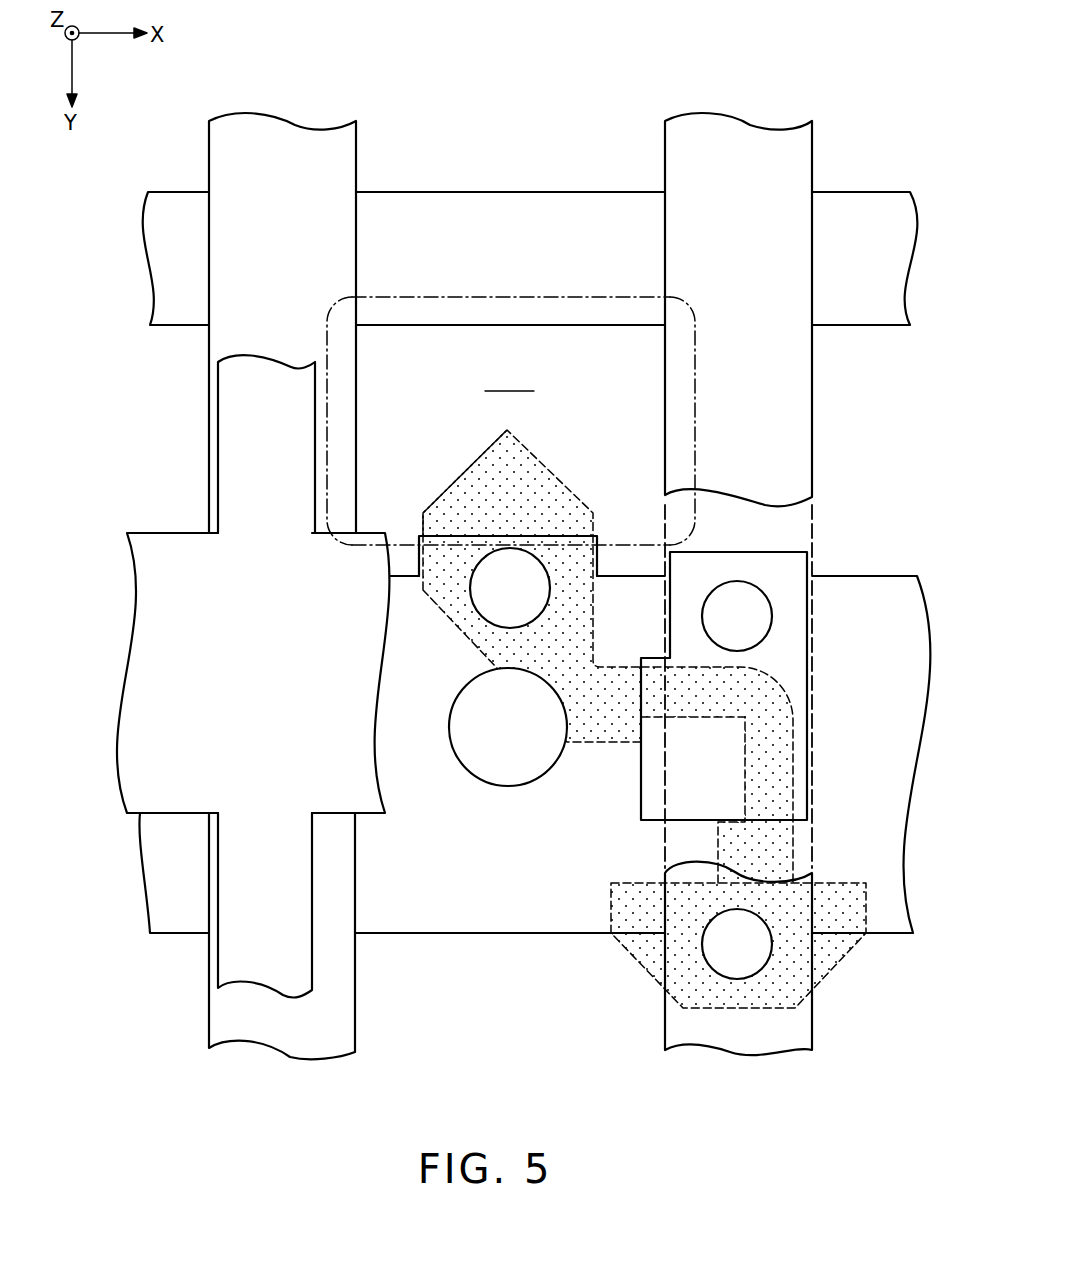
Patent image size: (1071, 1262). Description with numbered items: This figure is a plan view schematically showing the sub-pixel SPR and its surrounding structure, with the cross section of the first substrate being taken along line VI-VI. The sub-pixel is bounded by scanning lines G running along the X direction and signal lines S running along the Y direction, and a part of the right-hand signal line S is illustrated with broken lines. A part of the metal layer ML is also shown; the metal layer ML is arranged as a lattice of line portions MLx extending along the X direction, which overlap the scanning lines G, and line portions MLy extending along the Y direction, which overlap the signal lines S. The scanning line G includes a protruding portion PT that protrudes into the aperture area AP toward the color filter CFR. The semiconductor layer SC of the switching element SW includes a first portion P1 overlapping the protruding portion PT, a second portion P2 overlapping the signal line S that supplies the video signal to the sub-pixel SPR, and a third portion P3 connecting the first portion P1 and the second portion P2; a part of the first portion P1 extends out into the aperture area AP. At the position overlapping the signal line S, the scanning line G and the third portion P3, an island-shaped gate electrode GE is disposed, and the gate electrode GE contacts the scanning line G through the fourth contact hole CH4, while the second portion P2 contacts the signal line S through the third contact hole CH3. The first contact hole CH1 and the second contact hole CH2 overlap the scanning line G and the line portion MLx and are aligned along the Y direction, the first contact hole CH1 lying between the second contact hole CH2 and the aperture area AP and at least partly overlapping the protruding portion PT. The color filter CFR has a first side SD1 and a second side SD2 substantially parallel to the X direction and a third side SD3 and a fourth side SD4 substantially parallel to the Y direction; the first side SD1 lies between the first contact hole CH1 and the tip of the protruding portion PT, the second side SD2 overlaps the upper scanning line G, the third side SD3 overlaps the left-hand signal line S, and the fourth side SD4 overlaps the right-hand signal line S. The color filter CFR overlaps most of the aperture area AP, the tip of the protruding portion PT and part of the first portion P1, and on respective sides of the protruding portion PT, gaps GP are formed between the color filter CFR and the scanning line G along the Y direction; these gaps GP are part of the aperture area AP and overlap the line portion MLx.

The signal line S is at (208, 157).
The scanning line G is at (534, 537).
The metal layer ML is at (232, 676).
The line portion MLx is at (183, 537).
The line portion MLy is at (217, 451).
The color filter CFR is at (511, 415).
The first side SD1 is at (377, 547).
The second side SD2 is at (468, 295).
The third side SD3 is at (326, 432).
The fourth side SD4 is at (697, 428).
The aperture area AP is at (511, 415).
The sub-pixel SPR is at (509, 378).
The protruding portion PT is at (451, 538).
The first portion P1 is at (545, 462).
The second portion P2 is at (828, 972).
The third portion P3 is at (792, 720).
The semiconductor layer SC is at (643, 652).
The switching element SW is at (643, 652).
The gate electrode GE is at (807, 672).
The gap GP is at (410, 578).
The first contact hole CH1 is at (482, 616).
The second contact hole CH2 is at (466, 769).
The third contact hole CH3 is at (738, 980).
The fourth contact hole CH4 is at (737, 581).
The line VI- VI is at (508, 292).